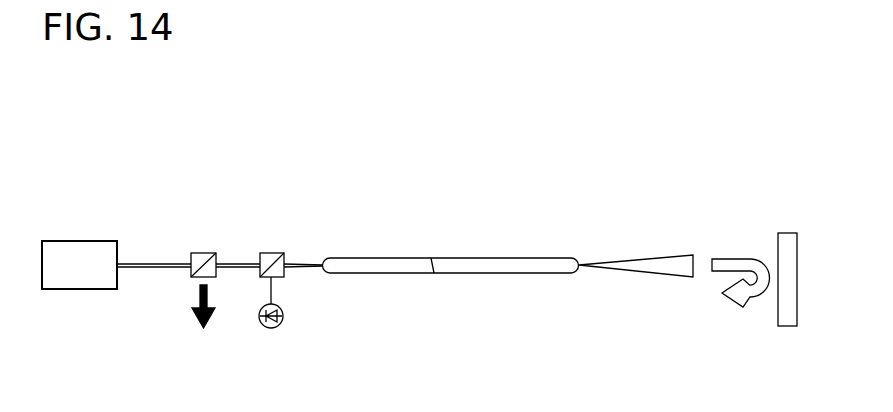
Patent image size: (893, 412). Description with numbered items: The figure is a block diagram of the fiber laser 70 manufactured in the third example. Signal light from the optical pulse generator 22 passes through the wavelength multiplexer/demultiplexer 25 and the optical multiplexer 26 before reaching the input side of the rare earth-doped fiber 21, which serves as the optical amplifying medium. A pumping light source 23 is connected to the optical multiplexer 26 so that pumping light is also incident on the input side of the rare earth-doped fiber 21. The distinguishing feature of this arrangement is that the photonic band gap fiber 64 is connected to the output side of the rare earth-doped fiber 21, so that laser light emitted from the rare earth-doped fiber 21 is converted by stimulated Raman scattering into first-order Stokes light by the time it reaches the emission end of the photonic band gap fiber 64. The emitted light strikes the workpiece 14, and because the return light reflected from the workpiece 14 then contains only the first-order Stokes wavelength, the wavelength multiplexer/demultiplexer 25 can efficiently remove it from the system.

The workpiece 14 is at (787, 326).
The rare earth-doped fiber 21 is at (375, 258).
The optical pulse generator 22 is at (80, 241).
The pumping light source 23 is at (283, 320).
The wavelength multiplexer/demultiplexer 25 is at (202, 253).
The optical multiplexer 26 is at (271, 253).
The photonic band gap fiber (PBGF) 64 is at (500, 258).
The fiber laser 70 is at (343, 213).